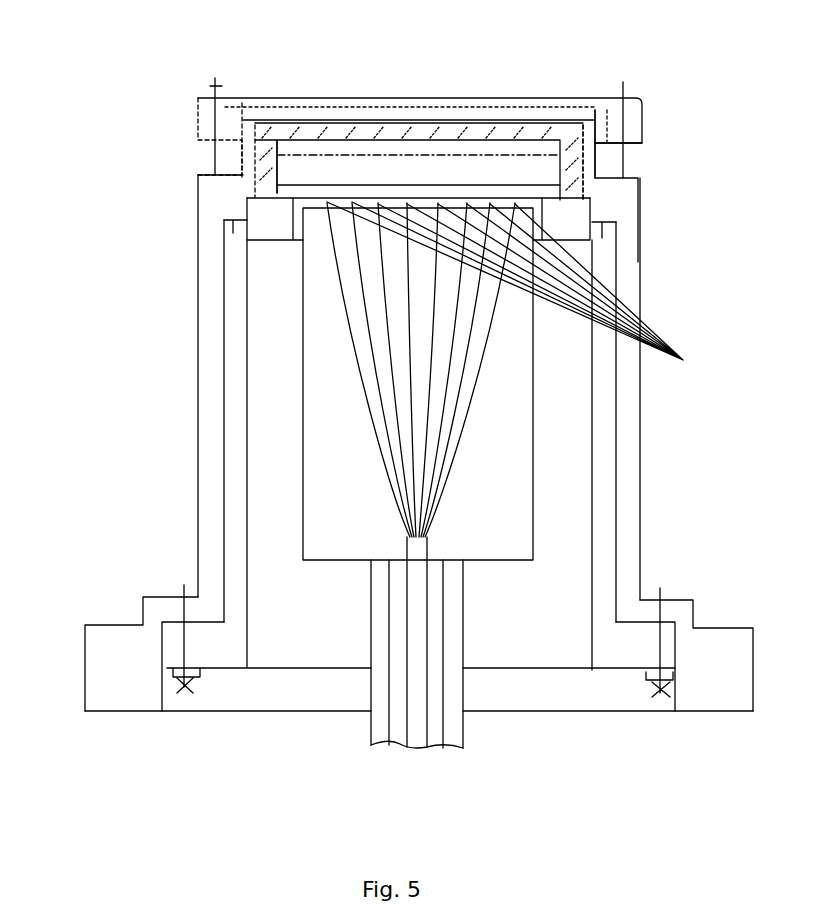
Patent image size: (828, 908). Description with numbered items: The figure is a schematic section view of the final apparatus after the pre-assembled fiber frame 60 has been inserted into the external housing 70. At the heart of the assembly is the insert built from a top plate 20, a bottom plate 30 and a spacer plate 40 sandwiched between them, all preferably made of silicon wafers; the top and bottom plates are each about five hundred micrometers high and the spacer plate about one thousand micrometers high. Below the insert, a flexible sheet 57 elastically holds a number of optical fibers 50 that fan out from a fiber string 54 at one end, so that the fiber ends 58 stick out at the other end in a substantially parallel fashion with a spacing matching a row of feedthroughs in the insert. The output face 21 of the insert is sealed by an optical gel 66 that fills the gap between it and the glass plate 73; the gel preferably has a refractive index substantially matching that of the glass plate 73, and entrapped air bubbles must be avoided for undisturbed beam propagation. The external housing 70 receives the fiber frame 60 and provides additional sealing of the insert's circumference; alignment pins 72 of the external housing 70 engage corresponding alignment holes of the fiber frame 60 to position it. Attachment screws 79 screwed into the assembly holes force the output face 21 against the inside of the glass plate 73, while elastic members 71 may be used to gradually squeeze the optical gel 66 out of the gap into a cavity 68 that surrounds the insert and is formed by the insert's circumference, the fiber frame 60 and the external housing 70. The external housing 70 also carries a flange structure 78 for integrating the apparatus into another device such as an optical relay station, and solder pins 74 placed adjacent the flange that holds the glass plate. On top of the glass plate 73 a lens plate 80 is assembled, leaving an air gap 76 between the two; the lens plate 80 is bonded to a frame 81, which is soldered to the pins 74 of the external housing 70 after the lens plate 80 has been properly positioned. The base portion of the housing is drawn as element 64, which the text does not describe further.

The top plate 20 is at (310, 170).
The output face 21 is at (458, 140).
The bottom plate 30 is at (280, 193).
The spacer plate 40 is at (283, 140).
The optical fibers 50 is at (488, 337).
The fiber string 54 is at (463, 720).
The flexible sheet 57 is at (303, 425).
The fiber ends 58 is at (521, 289).
The fiber frame 60 is at (233, 542).
The base plate 64 is at (280, 695).
The optical gel 66 is at (330, 133).
The cavity 68 is at (265, 173).
The external housing 70 is at (208, 318).
The elastic members 71 is at (173, 678).
The alignment pins 72 is at (233, 227).
The glass plate 73 is at (522, 115).
The solder pins 74 is at (214, 84).
The air gap 76 is at (370, 100).
The flange structure 78 is at (85, 638).
The attachment screws 79 is at (184, 620).
The lens plate 80 is at (413, 85).
The frame 81 is at (642, 130).